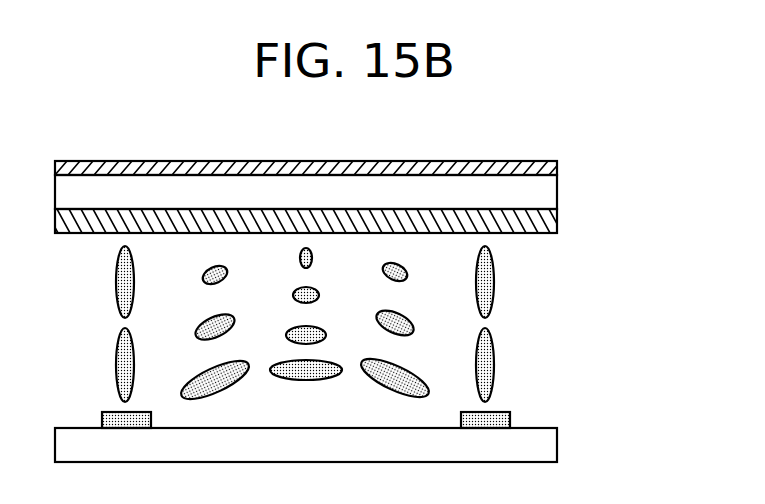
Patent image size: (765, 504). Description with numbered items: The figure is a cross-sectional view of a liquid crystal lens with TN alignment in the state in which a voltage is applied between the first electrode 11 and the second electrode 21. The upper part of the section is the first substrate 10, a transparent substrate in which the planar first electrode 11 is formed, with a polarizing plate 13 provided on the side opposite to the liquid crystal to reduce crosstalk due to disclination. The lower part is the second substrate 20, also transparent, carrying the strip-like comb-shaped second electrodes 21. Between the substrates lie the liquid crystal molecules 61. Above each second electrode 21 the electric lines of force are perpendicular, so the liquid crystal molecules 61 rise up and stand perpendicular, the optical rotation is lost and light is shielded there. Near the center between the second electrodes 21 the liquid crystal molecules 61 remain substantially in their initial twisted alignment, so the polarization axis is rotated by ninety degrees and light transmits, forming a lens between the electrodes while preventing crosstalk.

The polarizing plate 13 is at (552, 163).
The first substrate 10 is at (548, 191).
The first electrode 11 is at (548, 220).
The liquid crystal molecules 61 is at (493, 285).
The second electrode 21 is at (503, 418).
The second substrate 20 is at (548, 448).